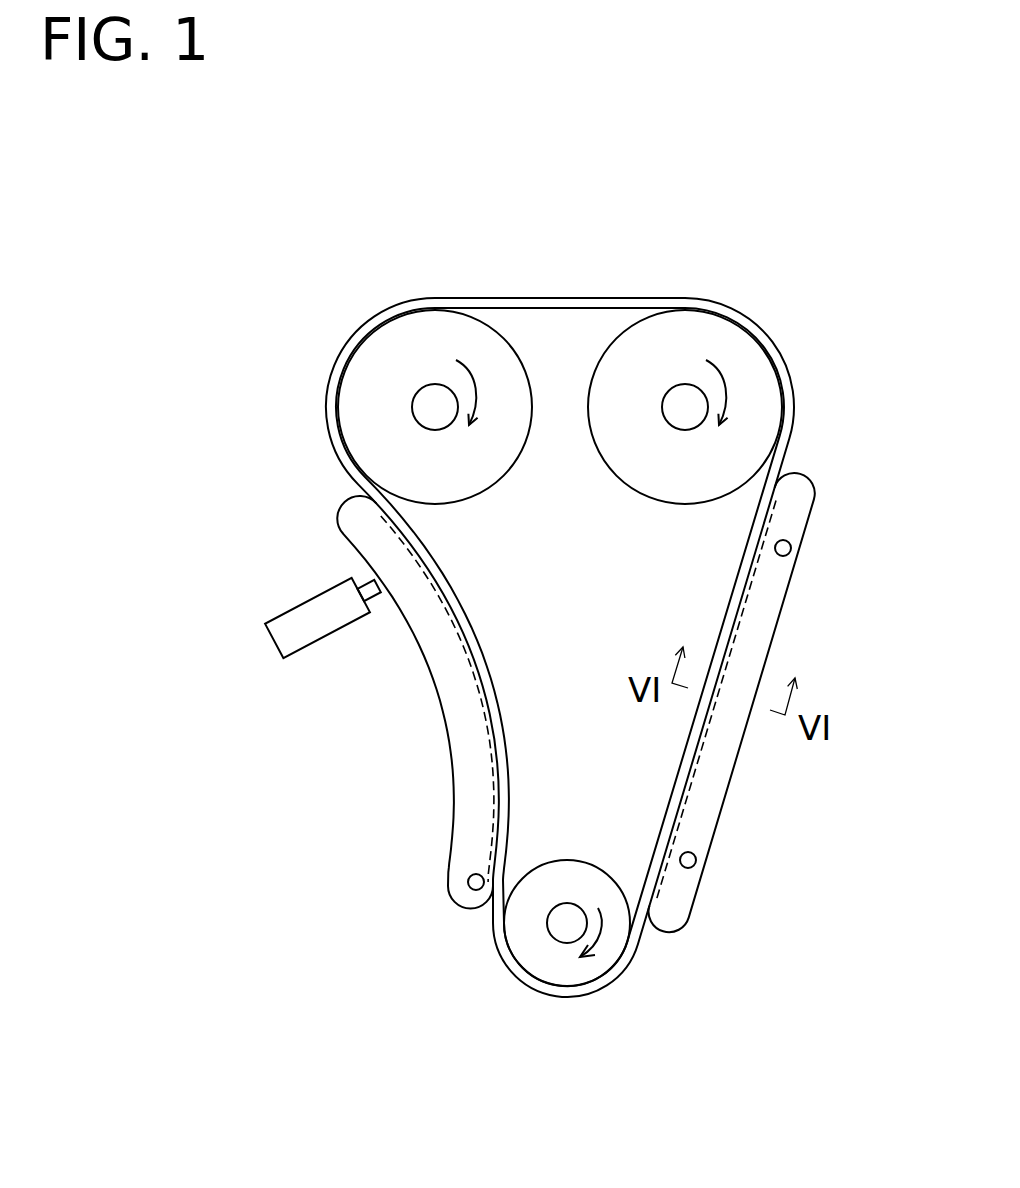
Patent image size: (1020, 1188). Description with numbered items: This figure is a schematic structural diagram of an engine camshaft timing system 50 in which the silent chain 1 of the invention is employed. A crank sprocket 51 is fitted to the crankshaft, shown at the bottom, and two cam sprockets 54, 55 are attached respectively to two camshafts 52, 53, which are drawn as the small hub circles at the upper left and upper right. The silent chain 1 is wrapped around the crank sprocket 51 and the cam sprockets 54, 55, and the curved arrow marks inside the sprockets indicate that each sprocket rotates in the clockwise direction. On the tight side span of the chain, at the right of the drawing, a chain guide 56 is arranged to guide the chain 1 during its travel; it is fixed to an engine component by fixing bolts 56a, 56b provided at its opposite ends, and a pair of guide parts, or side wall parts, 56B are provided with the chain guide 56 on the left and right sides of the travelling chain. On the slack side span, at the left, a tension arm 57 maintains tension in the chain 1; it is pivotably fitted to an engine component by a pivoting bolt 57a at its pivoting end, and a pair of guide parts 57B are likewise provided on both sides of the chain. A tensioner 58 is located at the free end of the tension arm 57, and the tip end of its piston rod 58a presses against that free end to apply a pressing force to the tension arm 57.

The silent chain 1 is at (657, 299).
The engine camshaft timing system 50 is at (458, 222).
The crank sprocket 51 is at (600, 960).
The camshaft 52 is at (437, 409).
The camshaft 53 is at (682, 409).
The cam sprocket 54 is at (355, 442).
The cam sprocket 55 is at (773, 408).
The chain guide 56 is at (745, 713).
The fixing bolt 56a is at (797, 547).
The fixing bolt 56b is at (693, 868).
The guide parts 56B is at (688, 752).
The tension arm 57 is at (461, 716).
The pivoting bolt 57a is at (473, 883).
The guide parts 57B is at (473, 652).
The tensioner 58 is at (311, 623).
The piston rod 58a is at (368, 590).